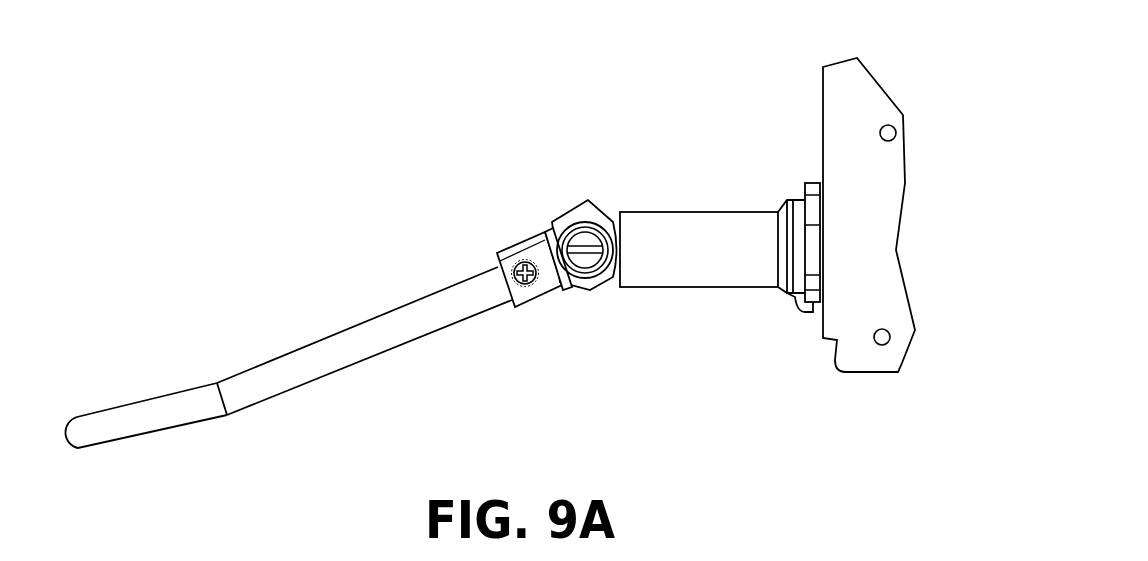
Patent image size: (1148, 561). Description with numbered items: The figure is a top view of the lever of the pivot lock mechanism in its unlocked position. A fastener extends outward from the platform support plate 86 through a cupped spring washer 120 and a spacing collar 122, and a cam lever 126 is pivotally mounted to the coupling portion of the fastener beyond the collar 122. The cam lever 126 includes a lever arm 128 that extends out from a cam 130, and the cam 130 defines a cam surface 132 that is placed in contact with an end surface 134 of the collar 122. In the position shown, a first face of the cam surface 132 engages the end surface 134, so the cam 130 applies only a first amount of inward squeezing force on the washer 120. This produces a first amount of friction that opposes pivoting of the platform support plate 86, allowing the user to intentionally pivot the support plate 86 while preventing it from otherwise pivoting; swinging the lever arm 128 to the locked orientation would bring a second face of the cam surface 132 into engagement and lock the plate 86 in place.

The platform support plate 86 is at (866, 88).
The cupped spring washer 120 is at (780, 212).
The spacing collar 122 is at (707, 238).
The cam lever 126 is at (262, 325).
The lever arm 128 is at (385, 318).
The cam 130 is at (558, 205).
The cam surface 132 is at (613, 217).
The end surface 134 is at (607, 287).